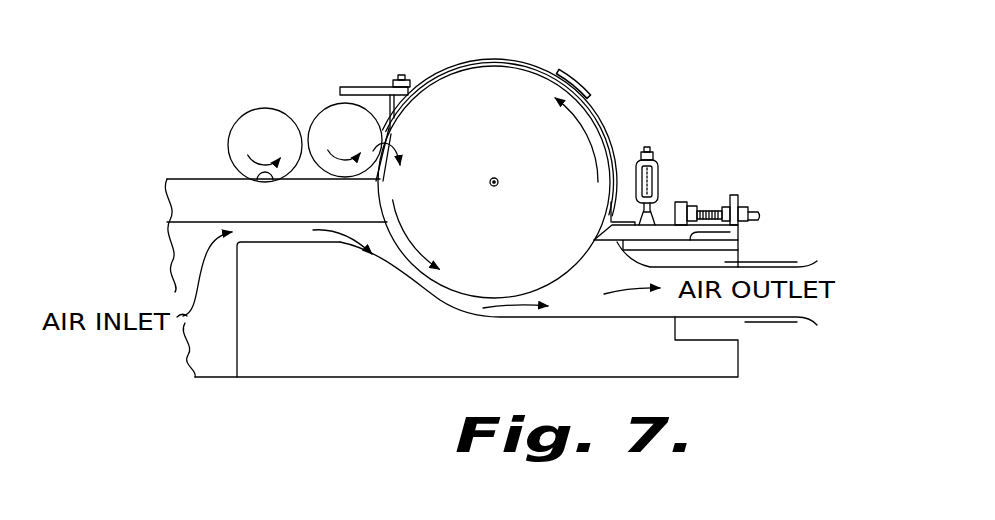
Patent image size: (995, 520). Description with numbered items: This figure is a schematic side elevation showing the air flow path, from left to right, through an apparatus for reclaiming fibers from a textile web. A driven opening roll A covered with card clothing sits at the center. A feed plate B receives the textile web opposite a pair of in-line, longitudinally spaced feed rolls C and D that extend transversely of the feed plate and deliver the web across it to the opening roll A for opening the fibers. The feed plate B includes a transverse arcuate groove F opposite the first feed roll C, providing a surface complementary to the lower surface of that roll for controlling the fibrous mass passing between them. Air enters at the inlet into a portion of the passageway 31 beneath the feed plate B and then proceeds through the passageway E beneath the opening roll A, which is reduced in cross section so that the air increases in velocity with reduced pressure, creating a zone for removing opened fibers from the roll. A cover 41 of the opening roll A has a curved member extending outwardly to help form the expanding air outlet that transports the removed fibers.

The opening roll A is at (525, 93).
The feed plate B is at (190, 178).
The first feed roll C is at (253, 108).
The second feed roll D is at (327, 113).
The passageway E is at (447, 299).
The transverse arcuate groove F is at (275, 178).
The passageway portion 31 is at (296, 231).
The cover 41 is at (607, 138).